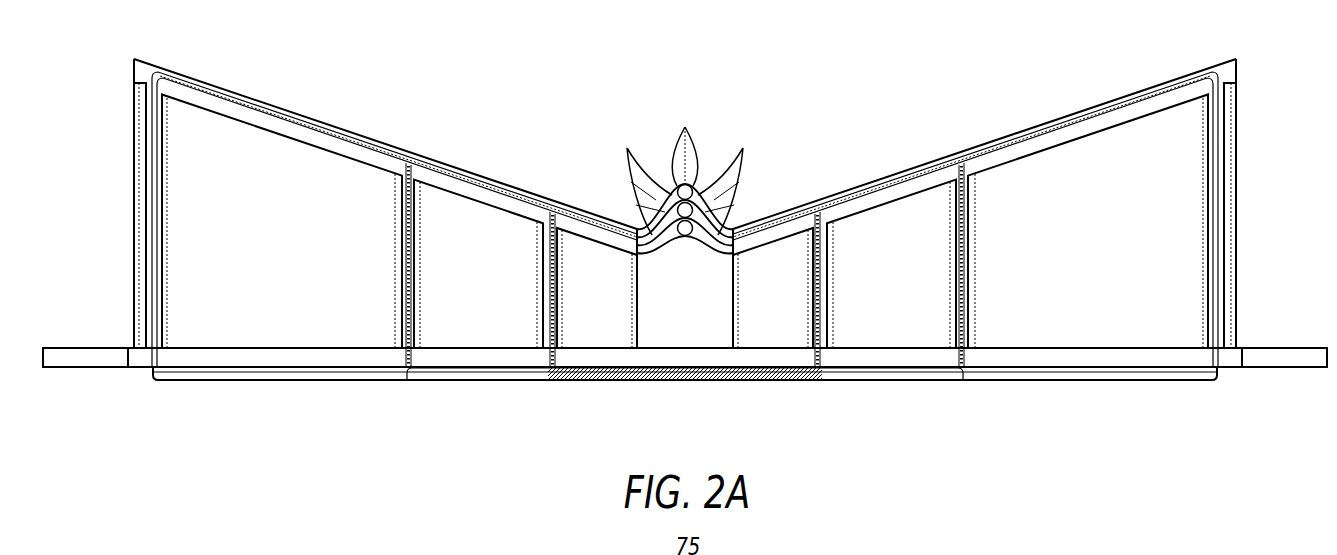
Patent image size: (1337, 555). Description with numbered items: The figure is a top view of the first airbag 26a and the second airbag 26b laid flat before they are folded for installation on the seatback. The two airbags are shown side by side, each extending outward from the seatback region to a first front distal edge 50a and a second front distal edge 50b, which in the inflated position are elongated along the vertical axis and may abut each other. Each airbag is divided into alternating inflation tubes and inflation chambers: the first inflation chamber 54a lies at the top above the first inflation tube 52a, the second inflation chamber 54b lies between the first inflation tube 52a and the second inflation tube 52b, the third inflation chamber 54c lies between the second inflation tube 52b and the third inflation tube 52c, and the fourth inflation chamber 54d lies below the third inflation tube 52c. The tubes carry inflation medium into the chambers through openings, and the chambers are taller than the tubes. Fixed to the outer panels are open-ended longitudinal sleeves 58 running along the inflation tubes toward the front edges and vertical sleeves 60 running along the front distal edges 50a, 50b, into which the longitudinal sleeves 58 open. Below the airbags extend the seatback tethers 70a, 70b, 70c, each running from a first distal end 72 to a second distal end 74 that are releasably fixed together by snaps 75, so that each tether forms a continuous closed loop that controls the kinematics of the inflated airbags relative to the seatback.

The first airbag 26a is at (988, 93).
The second airbag 26b is at (382, 93).
The first front distal edge 50a is at (900, 172).
The second front distal edge 50b is at (470, 172).
The first inflation tube 52a is at (566, 298).
The second inflation tube 52b is at (396, 238).
The third inflation tube 52c is at (168, 223).
The first inflation chamber 54a is at (598, 322).
The second inflation chamber 54b is at (479, 322).
The third inflation chamber 54c is at (277, 308).
The fourth inflation chamber 54d is at (133, 152).
The longitudinal sleeve 58 is at (147, 282).
The vertical sleeve 60 is at (288, 125).
The seatback tether 70a is at (548, 369).
The seatback tether 70b is at (963, 371).
The seatback tether 70c is at (163, 381).
The first distal end 72 is at (727, 179).
The second distal end 74 is at (643, 179).
The snap 75 is at (686, 168).